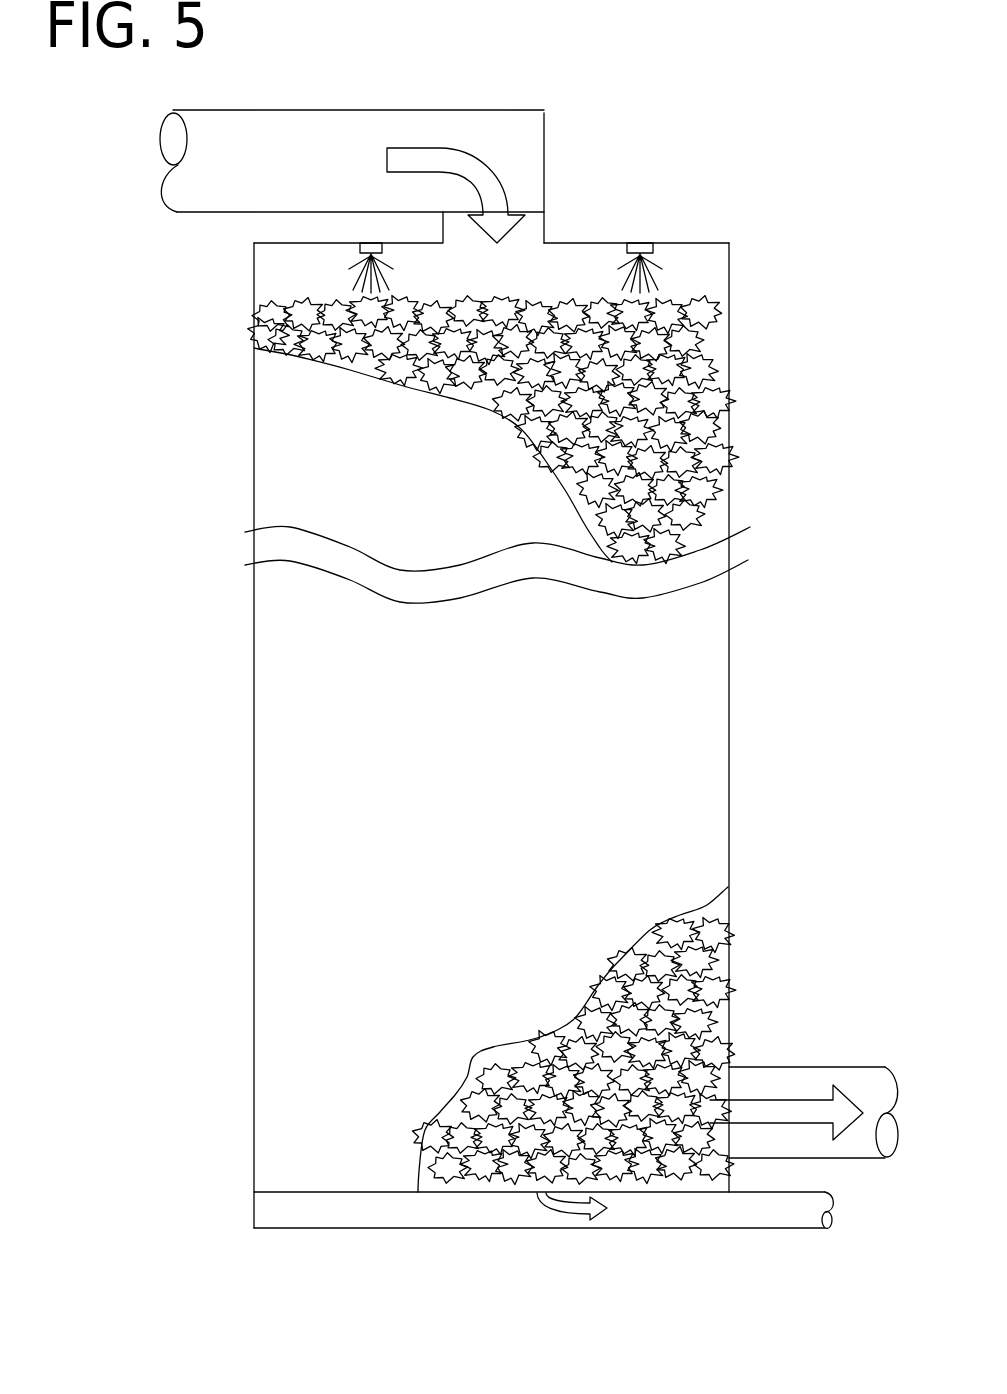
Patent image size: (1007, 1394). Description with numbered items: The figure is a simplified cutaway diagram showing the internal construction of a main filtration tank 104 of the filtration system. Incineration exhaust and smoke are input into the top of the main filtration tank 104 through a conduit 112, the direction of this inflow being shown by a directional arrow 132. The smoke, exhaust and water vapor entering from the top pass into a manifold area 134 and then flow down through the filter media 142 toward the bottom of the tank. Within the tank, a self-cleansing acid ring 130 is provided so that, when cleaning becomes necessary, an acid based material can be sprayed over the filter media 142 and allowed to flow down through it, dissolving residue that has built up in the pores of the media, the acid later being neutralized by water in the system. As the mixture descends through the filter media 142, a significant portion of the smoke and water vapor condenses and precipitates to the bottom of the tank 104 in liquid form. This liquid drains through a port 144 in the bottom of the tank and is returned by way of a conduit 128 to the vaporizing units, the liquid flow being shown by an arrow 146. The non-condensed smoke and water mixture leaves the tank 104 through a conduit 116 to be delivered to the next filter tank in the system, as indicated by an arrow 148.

The main filtration tank 104 is at (731, 663).
The conduit 112 is at (280, 110).
The conduit 116 is at (858, 1067).
The conduit 128 is at (790, 1230).
The self-cleansing acid ring 130 is at (370, 243).
The directional arrow 132 is at (417, 163).
The manifold area 134 is at (563, 254).
The filter media 142 is at (731, 412).
The port 144 is at (522, 1191).
The arrow 146 is at (578, 1214).
The arrow 148 is at (795, 1113).